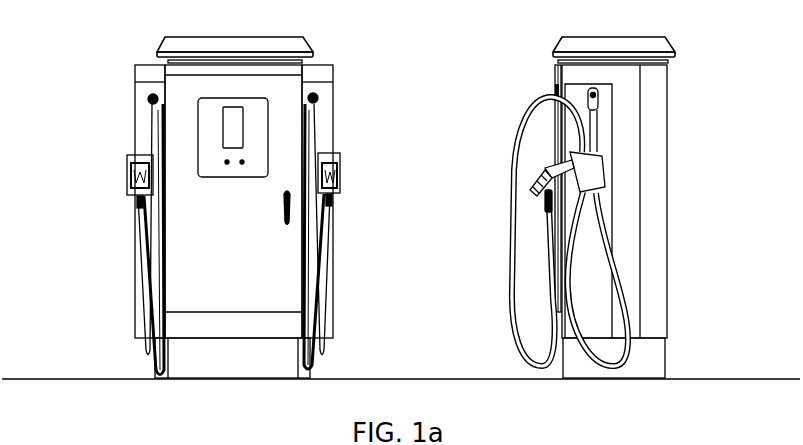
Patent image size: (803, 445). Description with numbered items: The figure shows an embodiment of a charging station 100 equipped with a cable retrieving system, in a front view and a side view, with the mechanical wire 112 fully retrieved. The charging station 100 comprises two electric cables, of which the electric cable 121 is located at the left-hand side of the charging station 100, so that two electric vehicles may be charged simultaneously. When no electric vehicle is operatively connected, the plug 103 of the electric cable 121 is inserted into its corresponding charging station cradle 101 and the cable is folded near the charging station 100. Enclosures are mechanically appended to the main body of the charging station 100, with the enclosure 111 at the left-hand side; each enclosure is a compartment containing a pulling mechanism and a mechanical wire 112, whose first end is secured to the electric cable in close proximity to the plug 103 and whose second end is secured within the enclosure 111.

The charging station 100 is at (228, 36).
The first connector holster 101 is at (132, 160).
The first charging connector 103 is at (130, 180).
The enclosure 111 is at (139, 96).
The mechanical wire 112 is at (556, 88).
The electric cable 121 is at (142, 348).